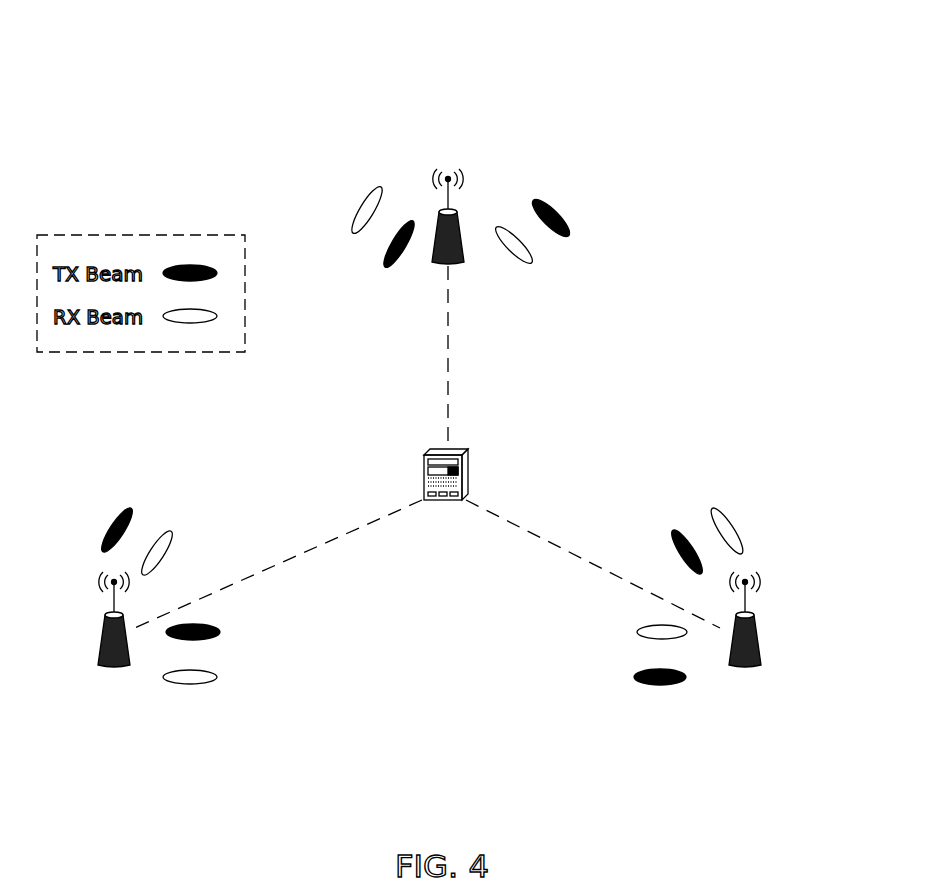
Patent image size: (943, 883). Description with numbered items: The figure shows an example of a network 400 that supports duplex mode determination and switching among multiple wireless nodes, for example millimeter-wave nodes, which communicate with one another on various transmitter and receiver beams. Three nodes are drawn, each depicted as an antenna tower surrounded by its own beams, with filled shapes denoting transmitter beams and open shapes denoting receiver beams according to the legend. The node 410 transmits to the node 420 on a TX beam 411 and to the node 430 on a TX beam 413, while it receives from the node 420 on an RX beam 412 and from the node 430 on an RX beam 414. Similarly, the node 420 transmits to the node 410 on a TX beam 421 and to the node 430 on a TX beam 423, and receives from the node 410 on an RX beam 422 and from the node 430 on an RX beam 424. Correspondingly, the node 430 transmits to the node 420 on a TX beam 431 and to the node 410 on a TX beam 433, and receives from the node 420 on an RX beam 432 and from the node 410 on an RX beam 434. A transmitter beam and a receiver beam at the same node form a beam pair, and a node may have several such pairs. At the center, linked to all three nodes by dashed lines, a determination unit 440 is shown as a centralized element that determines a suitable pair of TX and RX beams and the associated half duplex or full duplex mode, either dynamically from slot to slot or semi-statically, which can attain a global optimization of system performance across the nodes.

The network 400 is at (243, 85).
The node 410 is at (100, 662).
The TX beam 411 is at (130, 505).
The RX beam 412 is at (170, 533).
The TX beam 413 is at (220, 625).
The RX beam 414 is at (215, 670).
The node 420 is at (460, 213).
The TX beam 421 is at (386, 268).
The RX beam 422 is at (355, 233).
The TX beam 423 is at (568, 236).
The RX beam 424 is at (532, 265).
The node 430 is at (758, 640).
The TX beam 431 is at (672, 530).
The RX beam 432 is at (713, 508).
The TX beam 433 is at (636, 674).
The RX beam 434 is at (637, 630).
The determination unit 440 is at (424, 471).